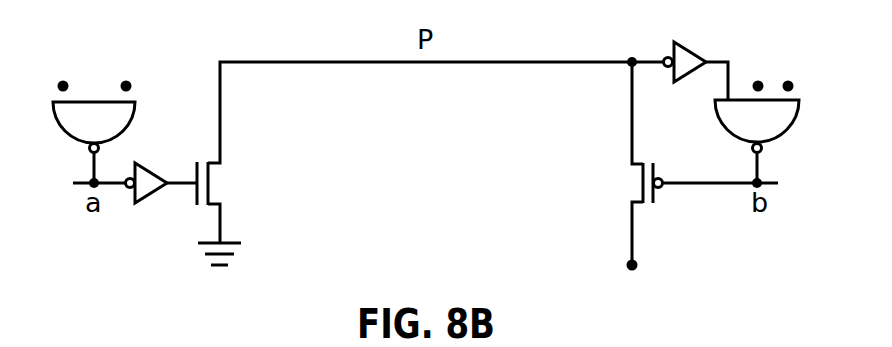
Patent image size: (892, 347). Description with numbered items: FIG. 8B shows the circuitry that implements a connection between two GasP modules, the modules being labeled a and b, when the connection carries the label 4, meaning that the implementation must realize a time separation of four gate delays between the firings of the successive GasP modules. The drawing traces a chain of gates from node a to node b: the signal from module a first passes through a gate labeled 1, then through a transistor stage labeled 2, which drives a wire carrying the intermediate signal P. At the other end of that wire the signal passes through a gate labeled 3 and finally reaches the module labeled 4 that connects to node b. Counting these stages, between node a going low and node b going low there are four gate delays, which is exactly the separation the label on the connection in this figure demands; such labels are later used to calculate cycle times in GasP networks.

The inverter 1 is at (166, 190).
The NMOS transistor 2 is at (430, 163).
The inverter 3 is at (696, 63).
The electrode pad 4 is at (743, 132).